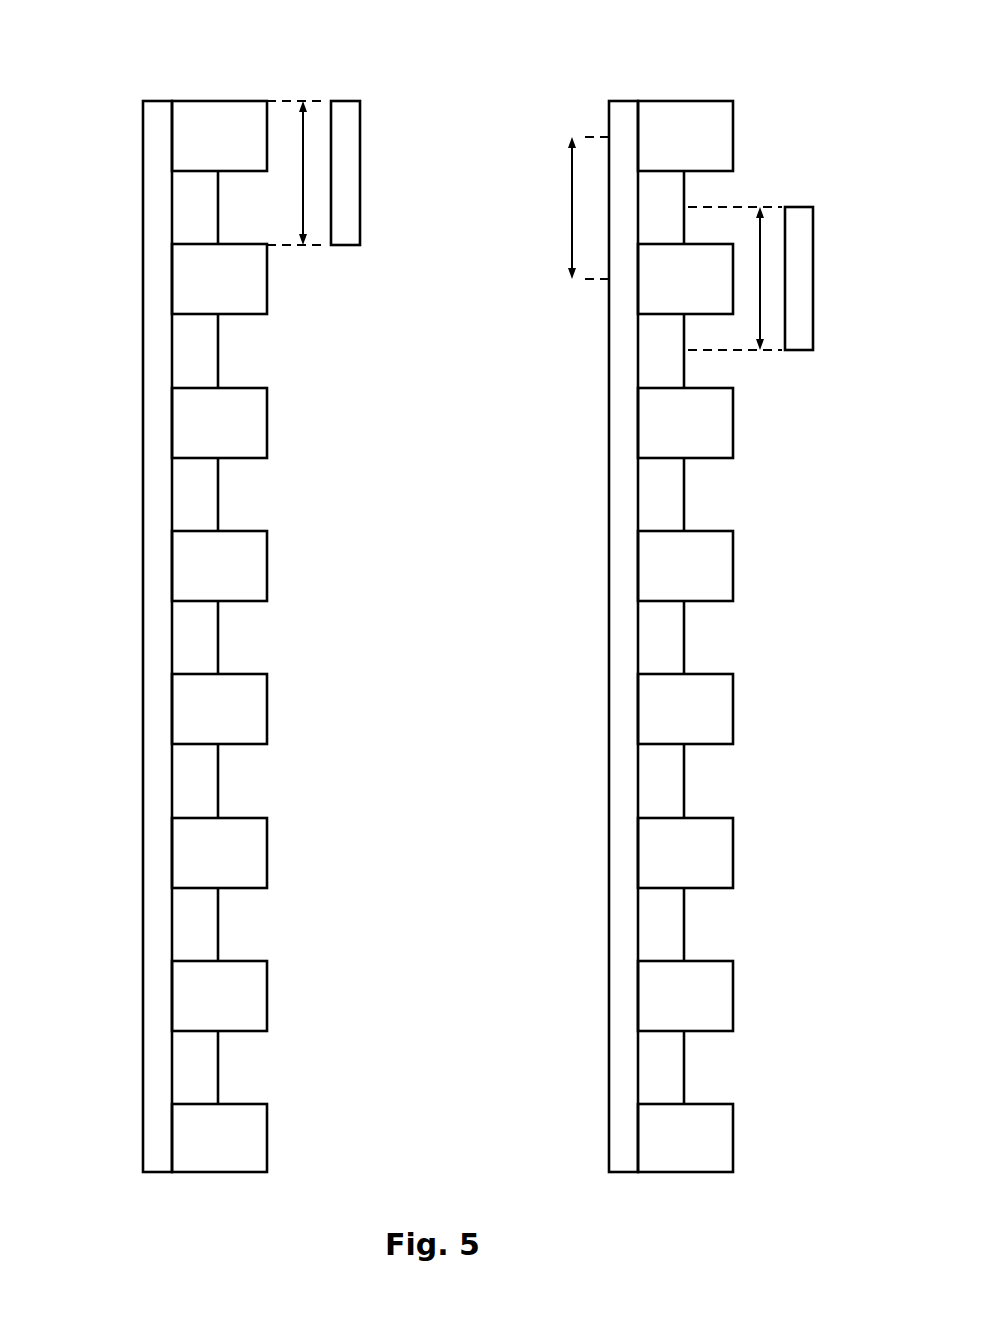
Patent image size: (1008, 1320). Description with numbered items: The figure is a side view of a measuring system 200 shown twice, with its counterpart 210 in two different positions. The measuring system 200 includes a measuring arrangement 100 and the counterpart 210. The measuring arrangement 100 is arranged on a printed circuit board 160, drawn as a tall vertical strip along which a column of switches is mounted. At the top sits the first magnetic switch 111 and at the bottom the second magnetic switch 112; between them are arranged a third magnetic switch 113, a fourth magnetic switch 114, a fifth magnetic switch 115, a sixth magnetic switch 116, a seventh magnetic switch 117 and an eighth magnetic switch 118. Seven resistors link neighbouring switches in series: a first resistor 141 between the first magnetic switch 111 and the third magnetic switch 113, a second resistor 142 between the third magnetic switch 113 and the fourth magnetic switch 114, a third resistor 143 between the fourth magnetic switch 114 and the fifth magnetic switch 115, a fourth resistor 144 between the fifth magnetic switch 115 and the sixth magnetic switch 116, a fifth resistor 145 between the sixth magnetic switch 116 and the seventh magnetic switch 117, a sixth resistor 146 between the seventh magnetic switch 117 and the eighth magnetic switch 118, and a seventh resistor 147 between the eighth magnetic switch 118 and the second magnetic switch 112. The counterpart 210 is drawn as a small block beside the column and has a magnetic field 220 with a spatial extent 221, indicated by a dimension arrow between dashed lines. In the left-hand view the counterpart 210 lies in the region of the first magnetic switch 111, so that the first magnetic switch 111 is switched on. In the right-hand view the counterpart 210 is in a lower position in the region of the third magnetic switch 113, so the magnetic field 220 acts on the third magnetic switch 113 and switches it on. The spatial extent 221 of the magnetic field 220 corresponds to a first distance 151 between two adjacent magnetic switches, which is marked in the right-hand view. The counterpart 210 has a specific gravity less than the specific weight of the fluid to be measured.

The measuring arrangement 100 is at (126, 1131).
The measuring system 200 is at (131, 38).
The first magnetic switch 111 is at (197, 150).
The second magnetic switch 112 is at (197, 1152).
The third magnetic switch 113 is at (197, 293).
The fourth magnetic switch 114 is at (197, 437).
The fifth magnetic switch 115 is at (197, 580).
The sixth magnetic switch 116 is at (197, 723).
The seventh magnetic switch 117 is at (197, 867).
The eighth magnetic switch 118 is at (197, 1010).
The first resistor 141 is at (190, 214).
The second resistor 142 is at (208, 359).
The third resistor 143 is at (208, 503).
The fourth resistor 144 is at (208, 646).
The fifth resistor 145 is at (208, 789).
The sixth resistor 146 is at (208, 933).
The seventh resistor 147 is at (208, 1076).
The first distance 151 is at (570, 206).
The printed circuit board 160 is at (152, 556).
The counterpart 210 is at (352, 222).
The magnetic field 220 is at (313, 123).
The spatial extent 221 is at (305, 142).